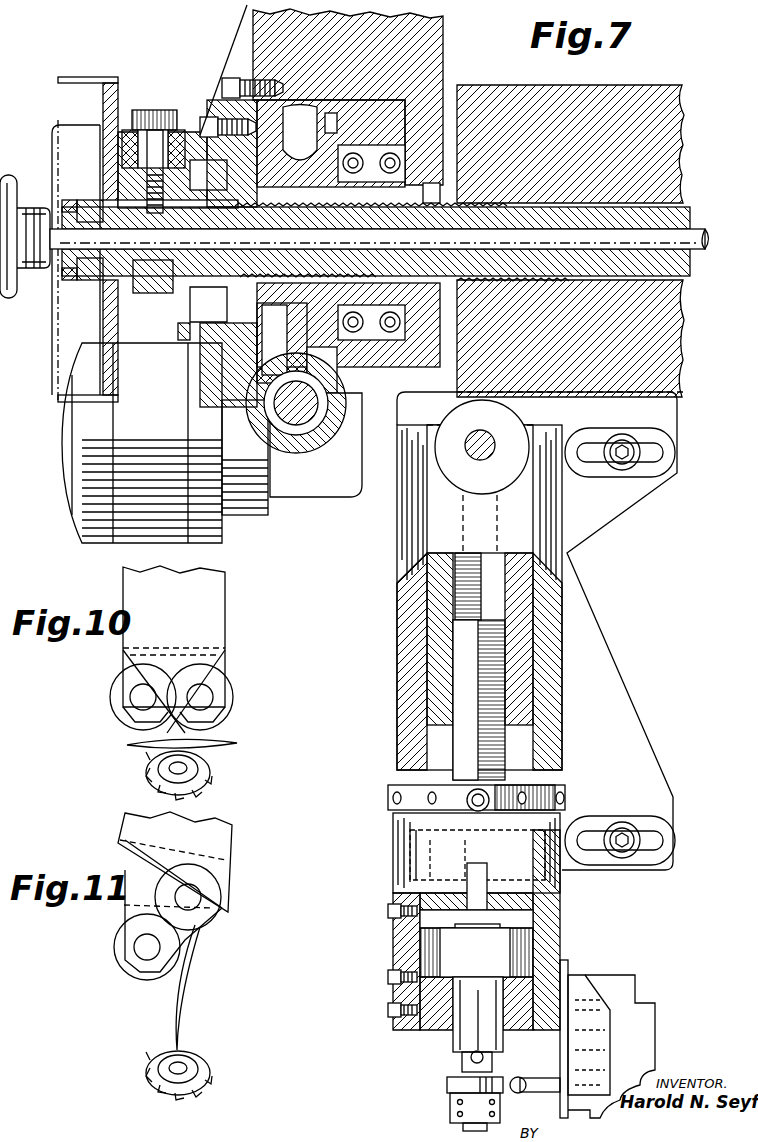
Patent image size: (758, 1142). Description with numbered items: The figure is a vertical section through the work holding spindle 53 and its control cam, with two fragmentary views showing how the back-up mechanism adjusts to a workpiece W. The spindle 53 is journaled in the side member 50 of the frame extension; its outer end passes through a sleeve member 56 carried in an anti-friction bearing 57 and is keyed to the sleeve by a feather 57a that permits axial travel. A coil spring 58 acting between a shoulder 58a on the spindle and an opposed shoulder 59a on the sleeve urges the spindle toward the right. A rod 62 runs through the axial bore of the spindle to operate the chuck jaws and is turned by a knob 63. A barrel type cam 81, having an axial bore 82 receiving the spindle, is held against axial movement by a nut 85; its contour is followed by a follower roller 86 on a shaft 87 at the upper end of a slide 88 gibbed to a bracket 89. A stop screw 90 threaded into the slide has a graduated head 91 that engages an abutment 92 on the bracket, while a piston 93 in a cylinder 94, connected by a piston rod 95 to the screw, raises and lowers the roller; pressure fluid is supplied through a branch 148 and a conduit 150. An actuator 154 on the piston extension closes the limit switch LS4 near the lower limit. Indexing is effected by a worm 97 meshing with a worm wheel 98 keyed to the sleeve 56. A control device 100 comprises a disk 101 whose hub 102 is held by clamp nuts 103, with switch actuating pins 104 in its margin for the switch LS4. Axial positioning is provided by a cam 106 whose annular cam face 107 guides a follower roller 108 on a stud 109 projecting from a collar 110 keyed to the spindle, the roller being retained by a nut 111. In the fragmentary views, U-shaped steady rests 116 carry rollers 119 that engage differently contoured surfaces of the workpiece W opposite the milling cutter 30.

In FIG. 10, the milling cutter 30 is at (212, 775).
In FIG. 11, the milling cutter 30 is at (212, 1068).
In FIG. 7, the side member 50 is at (432, 68).
In FIG. 7, the work holding spindle 53 is at (692, 212).
In FIG. 7, the sleeve member 56 is at (215, 286).
In FIG. 7, the anti-friction bearing 57 is at (352, 140).
In FIG. 7, the key or feather 57a is at (198, 212).
In FIG. 7, the coil spring 58 is at (370, 212).
In FIG. 7, the shoulder on the spindle 58a is at (412, 222).
In FIG. 7, the shoulder on the sleeve member 59a is at (240, 229).
In FIG. 7, the rod 62 is at (708, 246).
In FIG. 7, the knob or wheel 63 is at (12, 188).
In FIG. 7, the barrel type cam 81 is at (628, 84).
In FIG. 7, the axial bore 82 is at (683, 282).
In FIG. 7, the nut 85 is at (448, 188).
In FIG. 7, the follower roller 86 is at (496, 447).
In FIG. 7, the shaft 87 is at (478, 460).
In FIG. 7, the slide 88 is at (432, 520).
In FIG. 7, the bracket 89 is at (400, 695).
In FIG. 7, the stop screw 90 is at (500, 700).
In FIG. 7, the head 91 is at (567, 797).
In FIG. 7, the shoulder or abutment 92 is at (565, 810).
In FIG. 7, the piston 93 is at (522, 957).
In FIG. 7, the cylinder 94 is at (530, 925).
In FIG. 7, the piston rod 95 is at (482, 905).
In FIG. 7, the worm 97 is at (296, 425).
In FIG. 7, the worm wheel 98 is at (286, 330).
In FIG. 7, the control device 100 is at (131, 213).
In FIG. 7, the disk 101 is at (117, 95).
In FIG. 7, the hub portion 102 is at (100, 200).
In FIG. 7, the clamp nuts 103 is at (84, 282).
In FIG. 7, the switch actuating pins 104 is at (70, 77).
In FIG. 7, the cam 106 is at (196, 130).
In FIG. 7, the annular cam face 107 is at (182, 330).
In FIG. 7, the follower roller 108 is at (125, 137).
In FIG. 7, the stud 109 is at (147, 148).
In FIG. 7, the collar 110 is at (178, 328).
In FIG. 7, the nut 111 is at (140, 118).
In FIG. 10, the steady rest 116 is at (214, 612).
In FIG. 11, the steady rest 116 is at (222, 858).
In FIG. 10, the roller 119 is at (114, 695).
In FIG. 11, the roller 119 is at (210, 917).
In FIG. 7, the branch of the pressure line 148 is at (388, 977).
In FIG. 7, the conduit 150 is at (388, 918).
In FIG. 7, the actuator 154 is at (452, 1085).
In FIG. 7, the limit switch LS4 is at (560, 1075).
In FIG. 10, the workpiece W is at (228, 742).
In FIG. 11, the workpiece W is at (186, 997).